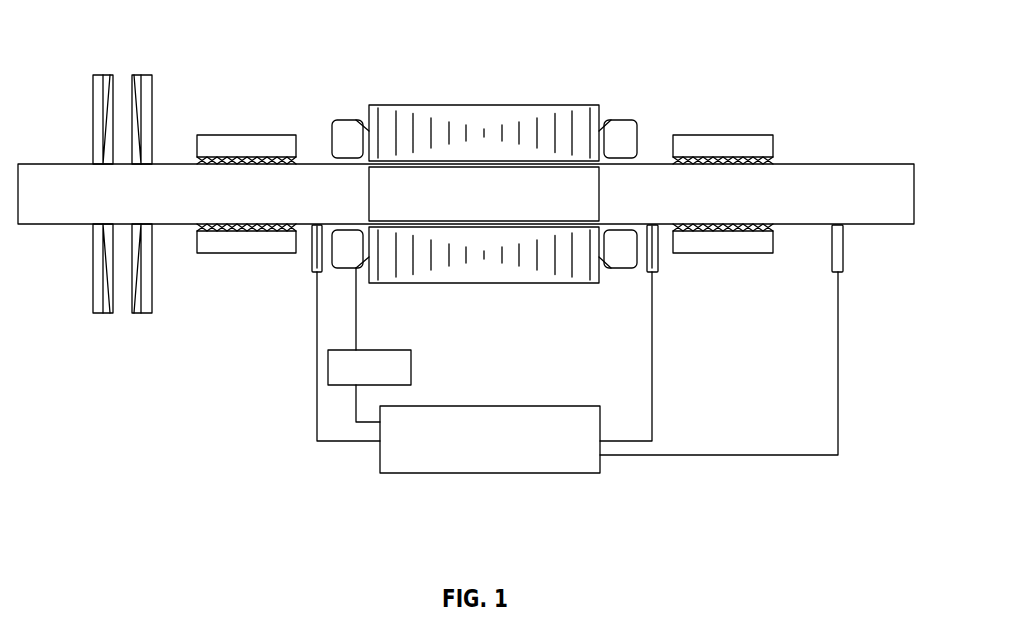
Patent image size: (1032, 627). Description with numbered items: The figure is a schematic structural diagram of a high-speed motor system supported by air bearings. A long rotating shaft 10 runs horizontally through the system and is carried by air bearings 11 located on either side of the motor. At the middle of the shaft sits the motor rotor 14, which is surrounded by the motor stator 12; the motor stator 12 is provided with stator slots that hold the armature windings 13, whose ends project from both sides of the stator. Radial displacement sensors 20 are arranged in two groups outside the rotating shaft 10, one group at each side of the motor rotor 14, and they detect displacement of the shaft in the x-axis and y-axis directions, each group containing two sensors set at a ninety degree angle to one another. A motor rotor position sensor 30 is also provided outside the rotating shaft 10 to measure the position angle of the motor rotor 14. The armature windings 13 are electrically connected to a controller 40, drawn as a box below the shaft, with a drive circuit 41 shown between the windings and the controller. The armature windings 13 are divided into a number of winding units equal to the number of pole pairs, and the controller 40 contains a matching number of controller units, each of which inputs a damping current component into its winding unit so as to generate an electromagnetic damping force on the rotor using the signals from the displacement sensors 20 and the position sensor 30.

The rotating shaft 10 is at (838, 173).
The air bearing 11 is at (730, 140).
The motor stator 12 is at (483, 105).
The armature winding 13 is at (628, 120).
The motor rotor 14 is at (541, 205).
The radial displacement sensor 20 is at (313, 271).
The motor rotor position sensor 30 is at (840, 268).
The controller 40 is at (552, 465).
The drive circuit 41 is at (411, 355).